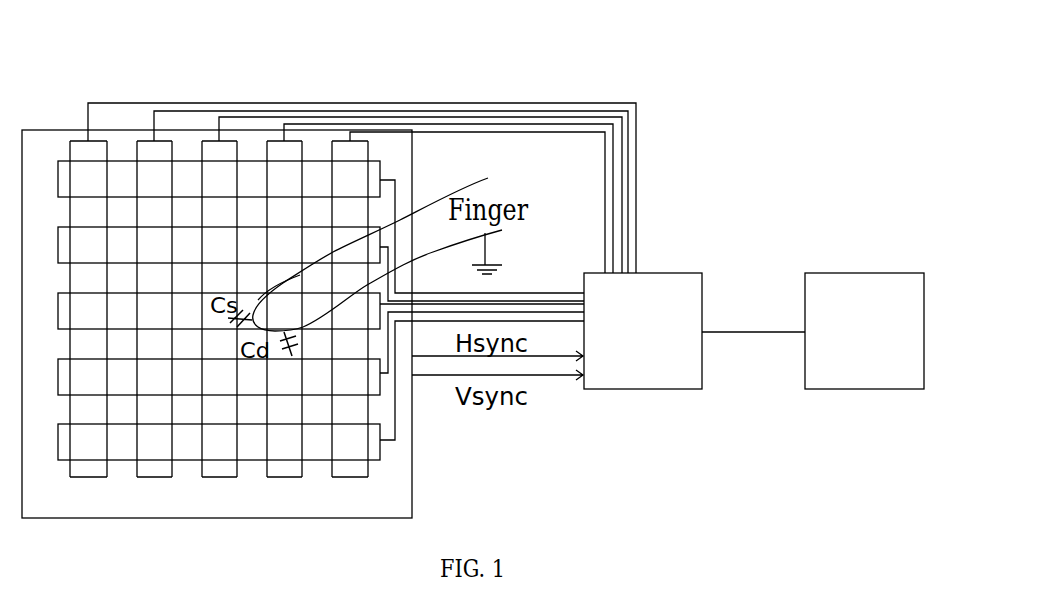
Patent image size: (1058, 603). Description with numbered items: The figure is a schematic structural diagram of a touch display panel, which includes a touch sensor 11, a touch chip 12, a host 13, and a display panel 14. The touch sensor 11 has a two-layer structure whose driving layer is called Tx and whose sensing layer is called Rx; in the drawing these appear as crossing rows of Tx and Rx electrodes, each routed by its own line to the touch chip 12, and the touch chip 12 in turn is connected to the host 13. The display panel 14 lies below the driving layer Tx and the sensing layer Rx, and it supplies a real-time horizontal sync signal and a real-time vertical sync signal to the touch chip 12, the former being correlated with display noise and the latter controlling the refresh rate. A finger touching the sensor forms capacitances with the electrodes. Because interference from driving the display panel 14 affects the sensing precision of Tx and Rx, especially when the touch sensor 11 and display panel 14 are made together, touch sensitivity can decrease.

The touch sensor 11 is at (377, 170).
The touch chip 12 is at (643, 331).
The host 13 is at (813, 331).
The display panel 14 is at (217, 324).